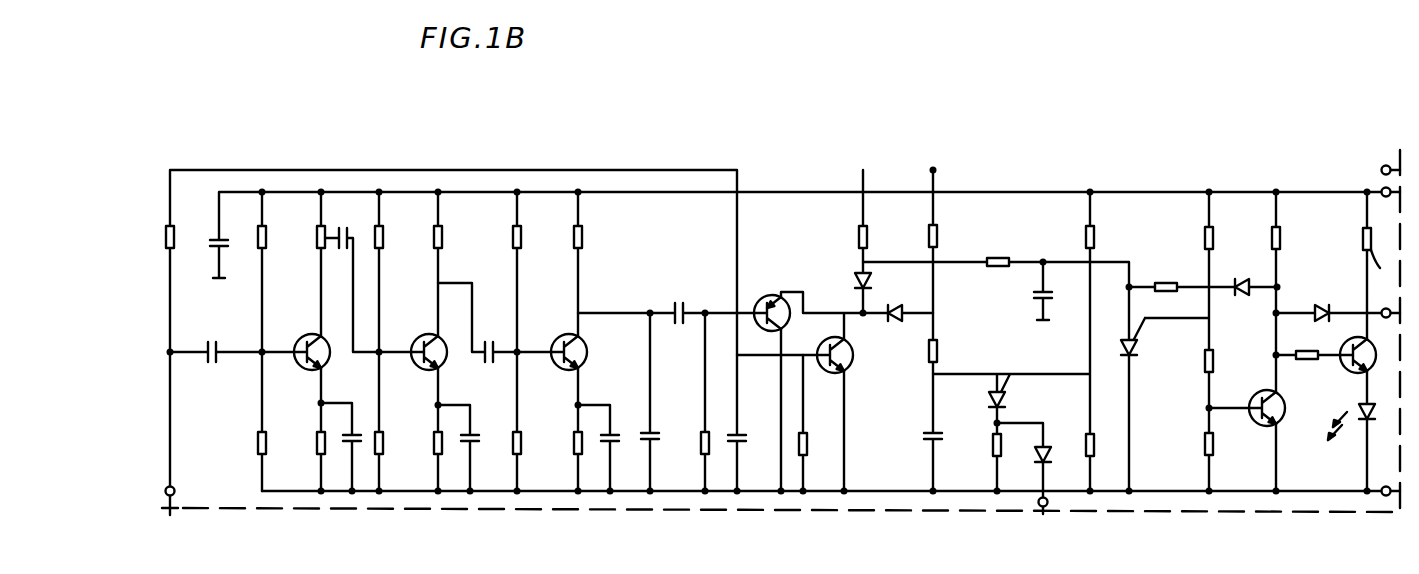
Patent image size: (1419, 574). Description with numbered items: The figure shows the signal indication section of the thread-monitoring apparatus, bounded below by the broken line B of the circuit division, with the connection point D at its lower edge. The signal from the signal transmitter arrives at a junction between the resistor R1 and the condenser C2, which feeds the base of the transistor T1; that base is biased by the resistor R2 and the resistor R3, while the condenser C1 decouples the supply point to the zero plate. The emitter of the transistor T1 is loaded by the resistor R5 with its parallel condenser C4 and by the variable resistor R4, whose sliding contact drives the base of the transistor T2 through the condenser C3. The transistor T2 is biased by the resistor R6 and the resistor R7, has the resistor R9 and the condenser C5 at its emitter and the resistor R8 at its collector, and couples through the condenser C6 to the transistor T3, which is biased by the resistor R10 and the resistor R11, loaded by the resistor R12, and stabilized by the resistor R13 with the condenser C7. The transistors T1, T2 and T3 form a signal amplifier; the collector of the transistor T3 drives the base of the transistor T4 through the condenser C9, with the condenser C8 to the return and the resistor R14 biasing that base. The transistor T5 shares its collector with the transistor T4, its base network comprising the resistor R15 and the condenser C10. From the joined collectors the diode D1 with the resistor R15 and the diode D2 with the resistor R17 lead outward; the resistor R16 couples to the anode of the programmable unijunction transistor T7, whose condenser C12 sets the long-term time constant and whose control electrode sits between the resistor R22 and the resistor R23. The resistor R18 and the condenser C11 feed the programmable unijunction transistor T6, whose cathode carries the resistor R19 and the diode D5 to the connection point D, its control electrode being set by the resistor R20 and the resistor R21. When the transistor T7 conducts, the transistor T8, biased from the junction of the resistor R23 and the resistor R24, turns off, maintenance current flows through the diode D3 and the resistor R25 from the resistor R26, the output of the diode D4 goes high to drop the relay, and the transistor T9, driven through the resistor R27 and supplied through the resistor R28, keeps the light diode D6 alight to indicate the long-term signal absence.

The resistor R1 is at (185, 237).
The resistor R2 is at (268, 235).
The resistor R3 is at (276, 443).
The variable resistor R4 is at (324, 232).
The resistor R5 is at (322, 444).
The resistor R6 is at (383, 235).
The resistor R7 is at (393, 443).
The resistor R8 is at (443, 235).
The resistor R9 is at (440, 444).
The resistor R10 is at (521, 235).
The resistor R11 is at (537, 448).
The resistor R12 is at (600, 236).
The resistor R13 is at (580, 444).
The resistor R14 is at (700, 438).
The resistor R15 is at (813, 458).
The resistor R16 is at (1007, 250).
The resistor R17 is at (956, 236).
The resistor R18 is at (954, 350).
The resistor R19 is at (970, 455).
The resistor R20 is at (1110, 237).
The resistor R21 is at (1095, 447).
The resistor R22 is at (1230, 238).
The resistor R23 is at (1229, 360).
The resistor R24 is at (1229, 447).
The resistor R25 is at (1168, 273).
The resistor R26 is at (1297, 238).
The resistor R27 is at (1310, 344).
The resistor R28 is at (1384, 258).
The condenser C1 is at (228, 230).
The condenser C2 is at (227, 340).
The condenser C3 is at (347, 230).
The condenser C4 is at (354, 425).
The condenser C5 is at (471, 425).
The condenser C6 is at (498, 337).
The condenser C7 is at (610, 425).
The condenser C8 is at (650, 424).
The condenser C9 is at (679, 302).
The condenser C10 is at (740, 426).
The condenser C11 is at (948, 423).
The condenser C12 is at (1050, 284).
The transistor T1 is at (327, 364).
The transistor T2 is at (444, 364).
The transistor T3 is at (584, 364).
The transistor T4 is at (772, 292).
The transistor T5 is at (850, 367).
The programmable unijunction transistor T6 is at (1014, 398).
The programmable unijunction transistor T7 is at (1146, 350).
The transistor T8 is at (1282, 420).
The transistor T9 is at (1347, 378).
The diode D1 is at (881, 279).
The diode D2 is at (907, 303).
The diode D3 is at (1243, 274).
The diode D4 is at (1319, 301).
The diode D5 is at (1051, 448).
The light diode D6 is at (1377, 413).
The broken line B is at (972, 512).
The connection point D is at (1042, 512).